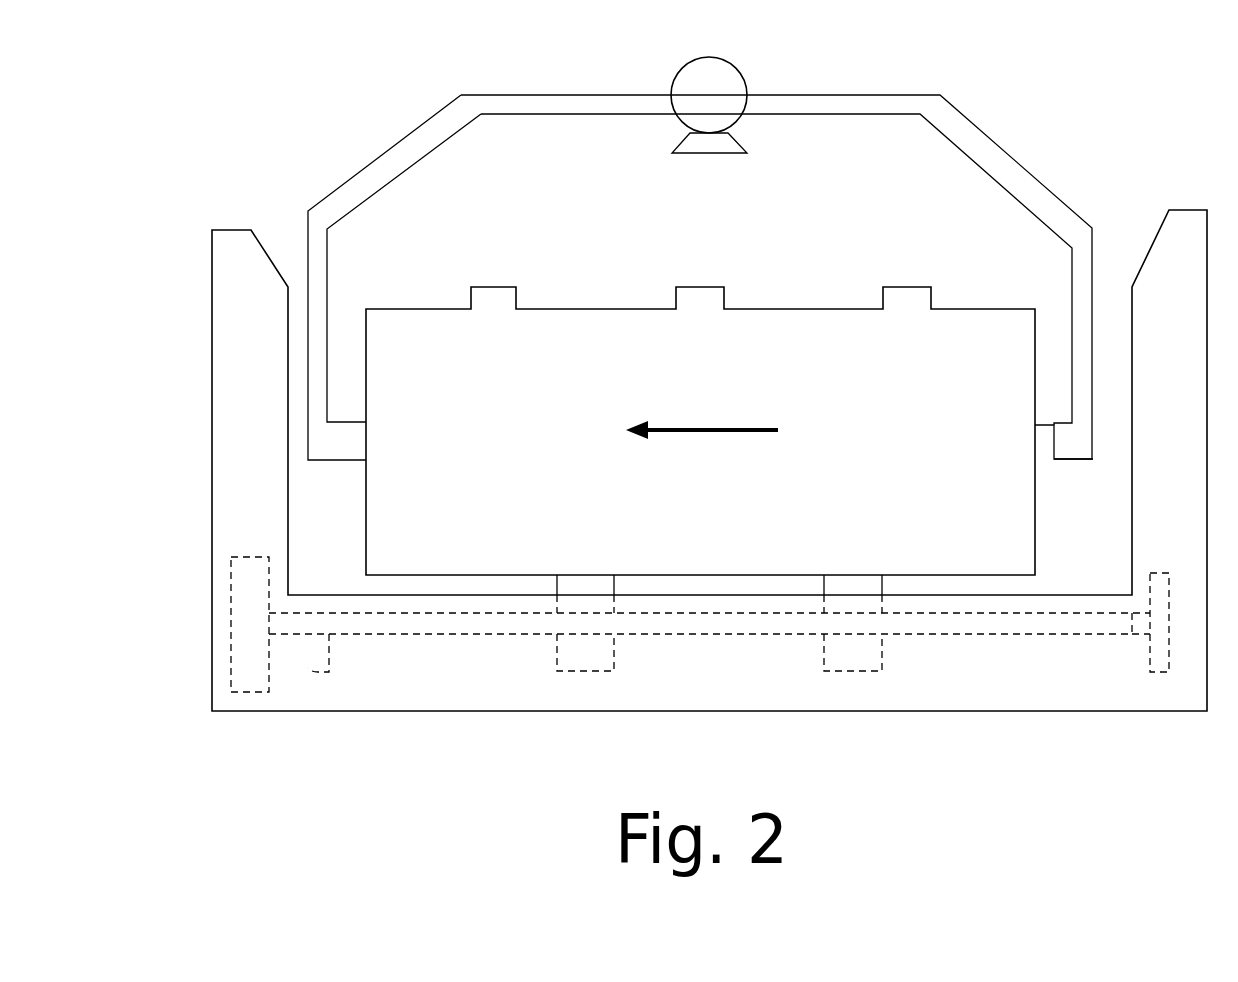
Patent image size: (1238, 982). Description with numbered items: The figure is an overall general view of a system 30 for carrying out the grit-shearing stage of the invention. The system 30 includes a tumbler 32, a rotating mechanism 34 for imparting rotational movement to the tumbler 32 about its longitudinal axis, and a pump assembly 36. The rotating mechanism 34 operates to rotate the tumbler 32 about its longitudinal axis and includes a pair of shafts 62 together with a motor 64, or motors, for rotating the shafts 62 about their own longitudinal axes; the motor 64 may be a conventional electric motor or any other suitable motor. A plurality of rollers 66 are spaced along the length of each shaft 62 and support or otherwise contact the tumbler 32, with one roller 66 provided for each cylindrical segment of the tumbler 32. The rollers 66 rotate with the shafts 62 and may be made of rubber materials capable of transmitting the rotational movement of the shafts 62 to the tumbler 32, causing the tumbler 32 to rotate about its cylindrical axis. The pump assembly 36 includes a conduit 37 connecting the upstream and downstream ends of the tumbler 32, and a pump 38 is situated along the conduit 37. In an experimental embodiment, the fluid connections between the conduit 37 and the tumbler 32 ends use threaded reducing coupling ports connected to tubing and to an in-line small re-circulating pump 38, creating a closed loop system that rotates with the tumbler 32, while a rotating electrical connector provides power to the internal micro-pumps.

The system 30 is at (250, 151).
The tumbler 32 is at (856, 417).
The rotating mechanism 34 is at (250, 503).
The pump assembly 36 is at (1012, 130).
The conduit 37 is at (394, 254).
The pump 38 is at (730, 72).
The shaft 62 is at (308, 668).
The motor 64 is at (250, 638).
The roller 66 is at (573, 672).